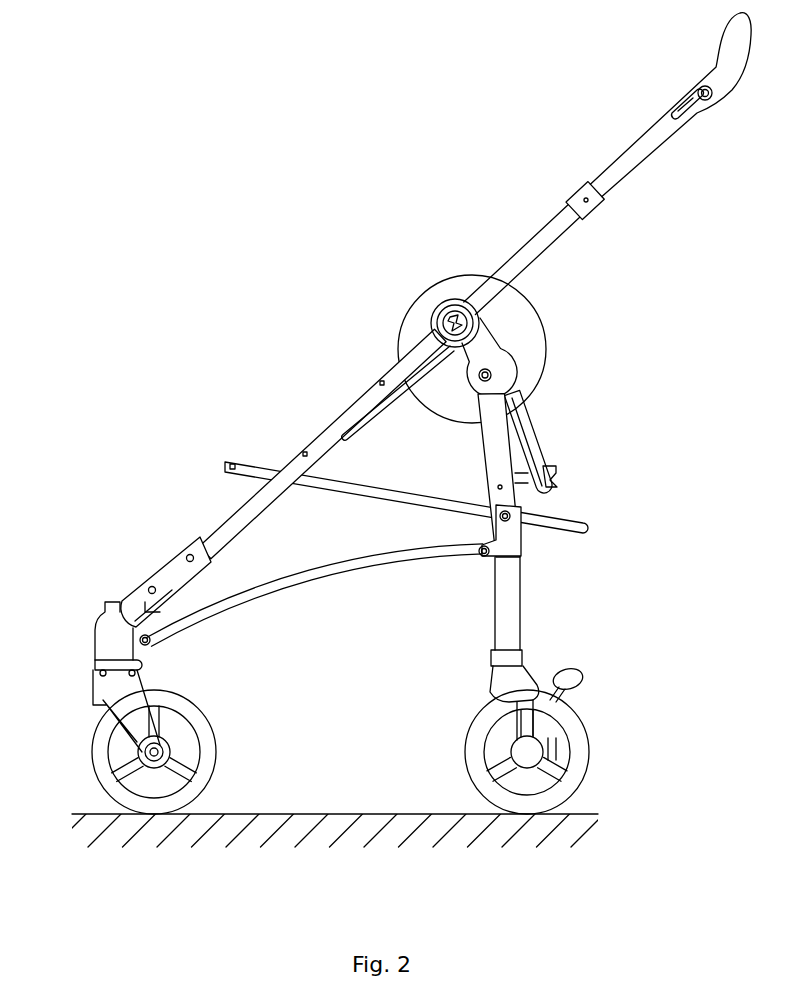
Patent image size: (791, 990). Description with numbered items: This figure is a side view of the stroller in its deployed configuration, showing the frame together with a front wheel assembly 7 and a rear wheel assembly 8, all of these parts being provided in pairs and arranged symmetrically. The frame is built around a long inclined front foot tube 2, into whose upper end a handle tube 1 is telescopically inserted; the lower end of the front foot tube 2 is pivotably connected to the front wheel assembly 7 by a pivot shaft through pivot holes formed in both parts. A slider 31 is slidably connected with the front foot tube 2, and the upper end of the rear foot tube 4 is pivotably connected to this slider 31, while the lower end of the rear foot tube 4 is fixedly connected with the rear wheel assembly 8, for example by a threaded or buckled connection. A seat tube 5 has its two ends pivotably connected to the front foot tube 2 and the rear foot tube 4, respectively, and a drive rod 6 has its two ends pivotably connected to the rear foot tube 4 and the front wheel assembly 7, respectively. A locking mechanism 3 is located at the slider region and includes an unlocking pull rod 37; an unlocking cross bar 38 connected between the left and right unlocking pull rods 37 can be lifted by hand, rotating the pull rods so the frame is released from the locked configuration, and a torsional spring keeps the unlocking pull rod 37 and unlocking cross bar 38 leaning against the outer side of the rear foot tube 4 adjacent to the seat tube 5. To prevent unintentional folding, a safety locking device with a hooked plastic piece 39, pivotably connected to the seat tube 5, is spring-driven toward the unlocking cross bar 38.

The handle tube 1 is at (628, 166).
The front foot tube 2 is at (537, 248).
The locking mechanism 3 is at (400, 332).
The slider 31 is at (440, 310).
The unlocking pull rod 37 is at (505, 367).
The unlocking cross bar 38 is at (530, 435).
The hooked plastic piece 39 is at (550, 475).
The rear foot tube 4 is at (503, 603).
The seat tube 5 is at (337, 483).
The drive rod 6 is at (310, 574).
The front wheel assembly 7 is at (115, 633).
The rear wheel assembly 8 is at (568, 722).